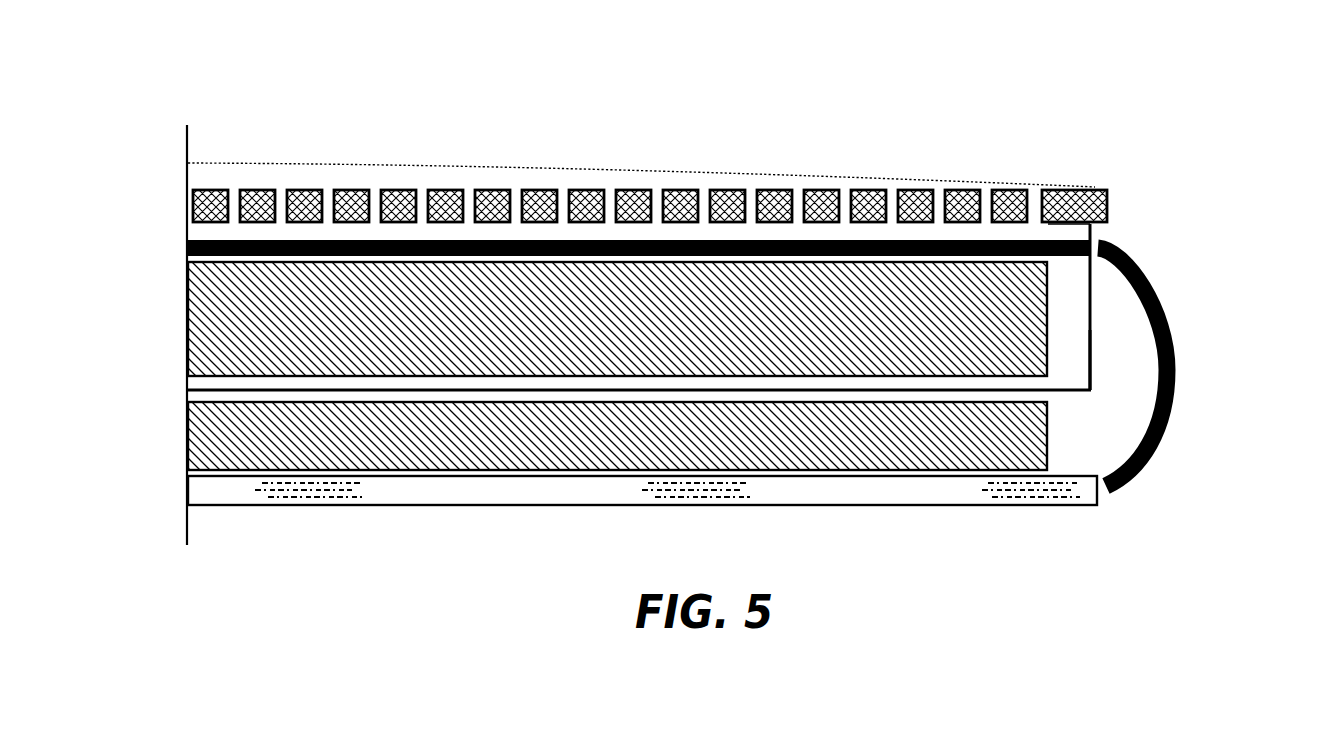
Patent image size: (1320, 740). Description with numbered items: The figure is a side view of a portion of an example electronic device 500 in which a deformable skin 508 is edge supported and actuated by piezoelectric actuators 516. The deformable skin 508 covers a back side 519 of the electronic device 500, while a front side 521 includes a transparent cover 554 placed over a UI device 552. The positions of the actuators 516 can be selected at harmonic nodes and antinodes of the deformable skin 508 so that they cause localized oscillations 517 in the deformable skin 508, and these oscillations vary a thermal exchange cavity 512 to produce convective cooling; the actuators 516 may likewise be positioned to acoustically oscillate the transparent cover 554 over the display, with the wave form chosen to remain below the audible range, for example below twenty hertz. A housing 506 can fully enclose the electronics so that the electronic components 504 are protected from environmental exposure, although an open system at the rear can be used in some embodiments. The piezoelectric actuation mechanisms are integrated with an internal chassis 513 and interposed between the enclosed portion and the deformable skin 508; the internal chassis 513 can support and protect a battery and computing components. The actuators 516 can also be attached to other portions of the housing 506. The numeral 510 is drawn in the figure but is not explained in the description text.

The electronic device 500 is at (693, 315).
The electronic components 504 is at (1047, 300).
The housing 506 is at (1165, 312).
The deformable skin 508 is at (527, 190).
The electrode 510 is at (751, 206).
The thermal exchange cavity 512 is at (396, 227).
The internal chassis 513 is at (1089, 352).
The piezoelectric actuators 516 is at (1090, 368).
The localized oscillations 517 is at (722, 168).
The back side 519 is at (1068, 150).
The front side 521 is at (1062, 524).
The UI device 552 is at (1047, 450).
The transparent cover 554 is at (328, 505).